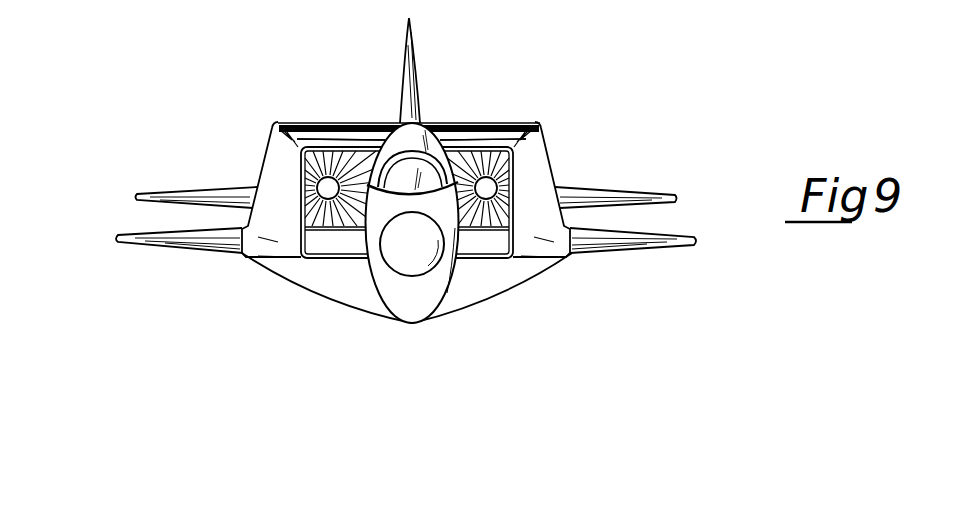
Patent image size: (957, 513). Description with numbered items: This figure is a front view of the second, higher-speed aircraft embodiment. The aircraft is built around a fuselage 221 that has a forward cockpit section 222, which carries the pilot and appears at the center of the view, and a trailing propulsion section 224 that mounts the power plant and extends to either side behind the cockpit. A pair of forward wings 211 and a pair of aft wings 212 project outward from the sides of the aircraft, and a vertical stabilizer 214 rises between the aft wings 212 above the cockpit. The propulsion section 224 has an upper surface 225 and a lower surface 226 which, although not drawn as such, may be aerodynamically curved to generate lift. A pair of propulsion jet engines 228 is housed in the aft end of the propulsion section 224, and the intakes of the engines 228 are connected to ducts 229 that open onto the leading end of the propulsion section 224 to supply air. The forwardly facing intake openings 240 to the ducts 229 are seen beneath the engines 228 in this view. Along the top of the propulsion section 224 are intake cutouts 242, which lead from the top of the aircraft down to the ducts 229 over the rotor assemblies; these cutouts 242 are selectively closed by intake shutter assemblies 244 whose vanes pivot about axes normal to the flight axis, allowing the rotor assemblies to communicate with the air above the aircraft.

The vertical stabilizer 214 is at (419, 43).
The intake shutter assemblies 244 is at (366, 121).
The intake cutouts 242 is at (280, 128).
The upper surface 225 is at (305, 140).
The intake openings 240 is at (323, 243).
The propulsion jet engines 228 is at (298, 163).
The ducts 229 is at (301, 189).
The aft wings 212 is at (157, 191).
The forward wings 211 is at (141, 232).
The lower surface 226 is at (330, 285).
The forward cockpit section 222 is at (436, 310).
The propulsion section 224 is at (367, 311).
The fuselage 221 is at (472, 318).